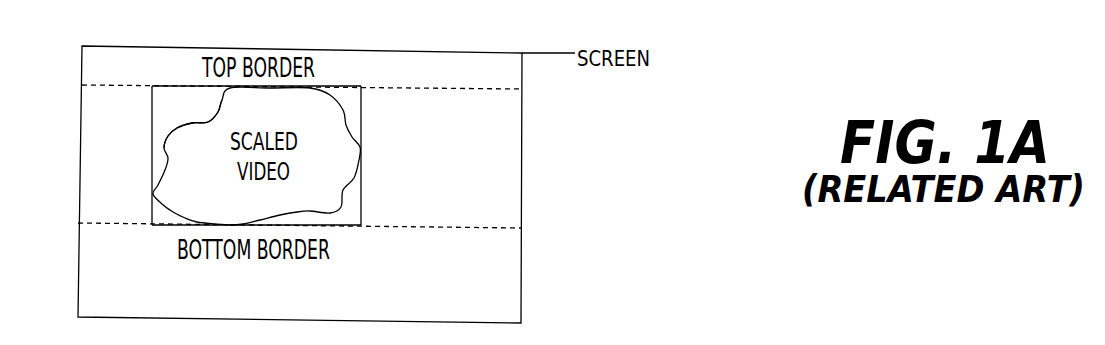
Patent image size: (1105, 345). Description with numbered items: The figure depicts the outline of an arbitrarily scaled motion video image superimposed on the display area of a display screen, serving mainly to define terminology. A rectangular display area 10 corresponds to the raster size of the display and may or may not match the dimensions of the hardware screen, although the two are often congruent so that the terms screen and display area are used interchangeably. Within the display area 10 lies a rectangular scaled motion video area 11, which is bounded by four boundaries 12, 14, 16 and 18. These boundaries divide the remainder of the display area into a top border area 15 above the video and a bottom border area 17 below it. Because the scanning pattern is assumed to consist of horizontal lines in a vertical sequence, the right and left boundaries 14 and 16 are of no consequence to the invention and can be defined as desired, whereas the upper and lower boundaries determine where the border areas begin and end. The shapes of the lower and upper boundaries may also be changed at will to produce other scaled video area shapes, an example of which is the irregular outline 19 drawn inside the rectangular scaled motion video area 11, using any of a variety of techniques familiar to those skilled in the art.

The display area 10 is at (492, 263).
The scaled motion video area 11 is at (332, 150).
The boundary 12 is at (349, 226).
The right boundary 14 is at (362, 203).
The top border area 15 is at (495, 82).
The left boundary 16 is at (152, 148).
The bottom border area 17 is at (492, 301).
The boundary 18 is at (353, 92).
The other scaled video area shape 19 is at (218, 108).